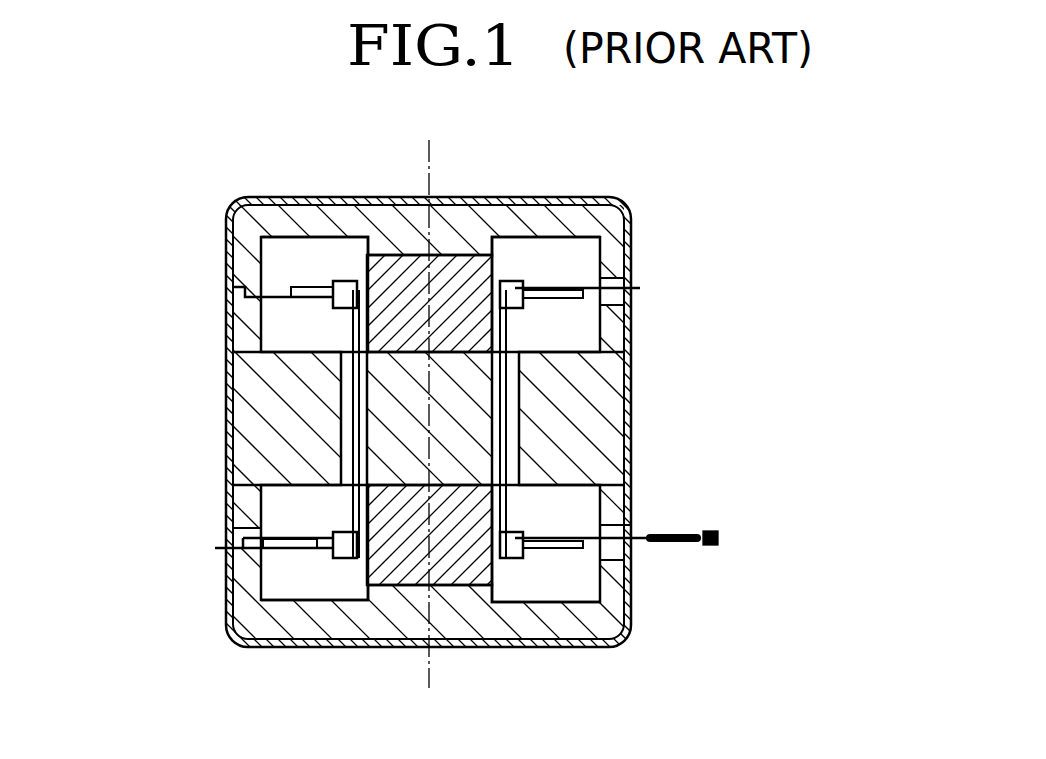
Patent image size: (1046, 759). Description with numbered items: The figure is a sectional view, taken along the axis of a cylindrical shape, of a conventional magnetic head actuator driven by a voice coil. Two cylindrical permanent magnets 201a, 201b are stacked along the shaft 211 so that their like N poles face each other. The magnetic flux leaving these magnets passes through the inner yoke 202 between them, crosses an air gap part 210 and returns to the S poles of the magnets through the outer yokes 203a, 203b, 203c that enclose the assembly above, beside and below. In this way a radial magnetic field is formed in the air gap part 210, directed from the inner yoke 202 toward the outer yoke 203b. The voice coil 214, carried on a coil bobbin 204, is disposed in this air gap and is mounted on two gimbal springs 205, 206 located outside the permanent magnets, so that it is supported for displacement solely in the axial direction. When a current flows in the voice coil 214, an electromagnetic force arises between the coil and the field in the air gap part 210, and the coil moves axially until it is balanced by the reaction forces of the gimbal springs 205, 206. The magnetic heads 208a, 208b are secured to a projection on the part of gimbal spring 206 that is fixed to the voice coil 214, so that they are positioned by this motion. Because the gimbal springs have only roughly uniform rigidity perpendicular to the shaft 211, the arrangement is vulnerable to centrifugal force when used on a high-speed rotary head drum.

The cylindrical permanent magnet 201a is at (387, 267).
The cylindrical permanent magnet 201b is at (393, 563).
The inner yoke 202 is at (522, 383).
The outer yoke 203a is at (477, 230).
The outer yoke 203b is at (570, 413).
The outer yoke 203c is at (573, 620).
The coil bobbin 204 is at (352, 496).
The gimbal spring 205 is at (290, 290).
The gimbal spring 206 is at (288, 534).
The magnetic head 208a is at (577, 293).
The magnetic head 208b is at (708, 554).
The air gap part 210 is at (515, 453).
The shaft 211 is at (429, 158).
The voice coil 214 is at (352, 384).